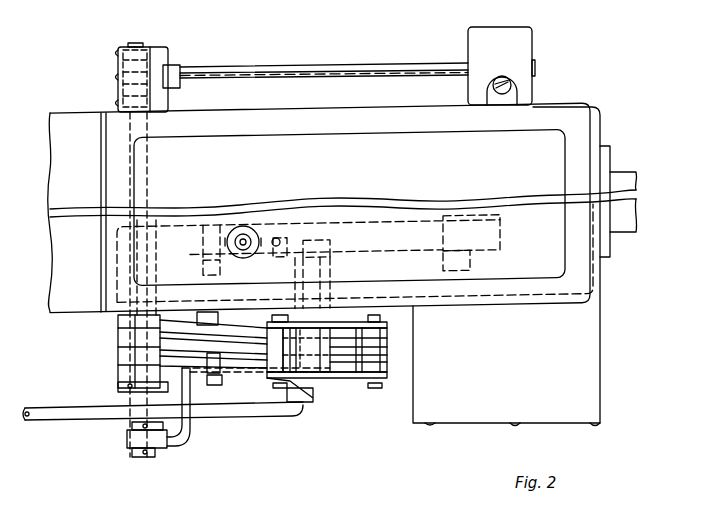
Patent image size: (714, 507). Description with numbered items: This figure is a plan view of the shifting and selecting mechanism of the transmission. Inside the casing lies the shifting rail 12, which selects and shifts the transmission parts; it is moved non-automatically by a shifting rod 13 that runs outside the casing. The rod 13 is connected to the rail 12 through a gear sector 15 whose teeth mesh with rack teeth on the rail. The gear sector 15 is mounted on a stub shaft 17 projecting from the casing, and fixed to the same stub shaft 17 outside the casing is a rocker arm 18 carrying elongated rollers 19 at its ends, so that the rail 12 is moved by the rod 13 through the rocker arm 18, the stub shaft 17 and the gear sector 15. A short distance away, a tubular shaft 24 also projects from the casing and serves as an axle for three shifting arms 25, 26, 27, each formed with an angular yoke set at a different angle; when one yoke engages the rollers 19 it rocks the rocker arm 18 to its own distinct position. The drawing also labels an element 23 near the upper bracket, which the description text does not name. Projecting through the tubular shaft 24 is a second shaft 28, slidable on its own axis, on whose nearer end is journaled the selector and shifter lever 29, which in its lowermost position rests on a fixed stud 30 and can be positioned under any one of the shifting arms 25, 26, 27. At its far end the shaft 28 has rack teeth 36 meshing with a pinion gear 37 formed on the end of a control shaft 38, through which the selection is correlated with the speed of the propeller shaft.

The shifting rail 12 is at (385, 250).
The shifting rod 13 is at (345, 242).
The gear sector 15 is at (60, 415).
The stub shaft 17 is at (325, 275).
The rocker arm 18 is at (354, 378).
The elongated rollers 19 is at (268, 328).
The adjusting rod 23 is at (138, 46).
The tubular shaft 24 is at (133, 394).
The shifting arm 25 is at (118, 328).
The shifting arm 26 is at (118, 352).
The shifting arm 27 is at (118, 372).
The second shaft 28 is at (143, 455).
The selector and shifter lever 29 is at (180, 440).
The fixed stud 30 is at (213, 383).
The rack teeth 36 is at (120, 62).
The pinion gear 37 is at (168, 57).
The control shaft 38 is at (310, 70).